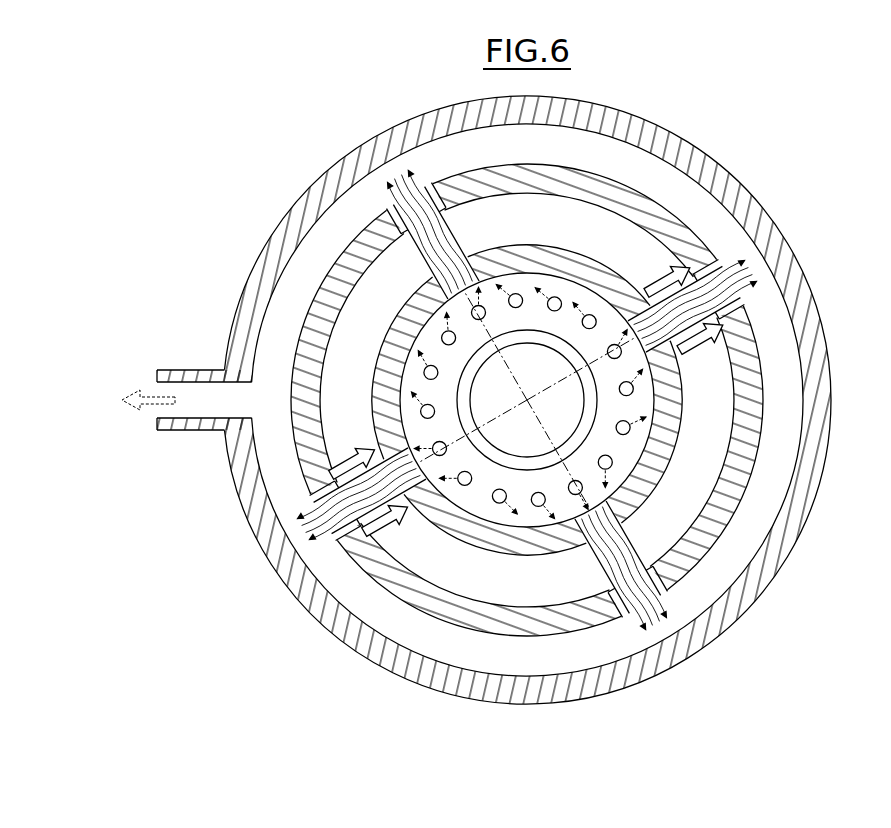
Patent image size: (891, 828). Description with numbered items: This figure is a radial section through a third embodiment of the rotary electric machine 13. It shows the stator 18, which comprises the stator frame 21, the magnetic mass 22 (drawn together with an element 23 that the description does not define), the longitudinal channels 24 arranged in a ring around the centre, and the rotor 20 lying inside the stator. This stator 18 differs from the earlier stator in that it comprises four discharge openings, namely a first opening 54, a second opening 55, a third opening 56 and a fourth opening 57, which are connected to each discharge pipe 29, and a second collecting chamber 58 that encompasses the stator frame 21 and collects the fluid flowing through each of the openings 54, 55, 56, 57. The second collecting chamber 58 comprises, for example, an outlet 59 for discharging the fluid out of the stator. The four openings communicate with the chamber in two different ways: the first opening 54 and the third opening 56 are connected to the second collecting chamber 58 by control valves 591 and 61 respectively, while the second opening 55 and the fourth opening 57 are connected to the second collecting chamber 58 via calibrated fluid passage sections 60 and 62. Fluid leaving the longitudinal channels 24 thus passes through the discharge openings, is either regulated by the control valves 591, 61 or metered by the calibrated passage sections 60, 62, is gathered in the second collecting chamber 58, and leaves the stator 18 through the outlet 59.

The rotary electric machine 13 is at (793, 167).
The stator 18 is at (833, 332).
The rotor 20 is at (371, 558).
The stator frame 21 is at (663, 432).
The magnetic mass 22 is at (505, 455).
The central passage 23 is at (397, 400).
The longitudinal channels 24 is at (425, 370).
The discharge pipe 29 is at (627, 465).
The first discharge opening 54 is at (376, 450).
The second discharge opening 55 is at (630, 523).
The third discharge opening 56 is at (647, 288).
The fourth discharge opening 57 is at (427, 253).
The second collecting chamber 58 is at (780, 416).
The outlet 59 is at (152, 393).
The calibrated fluid passage section 60 is at (606, 597).
The control valve 61 is at (698, 349).
The calibrated fluid passage section 62 is at (464, 236).
The control valve 591 is at (385, 521).